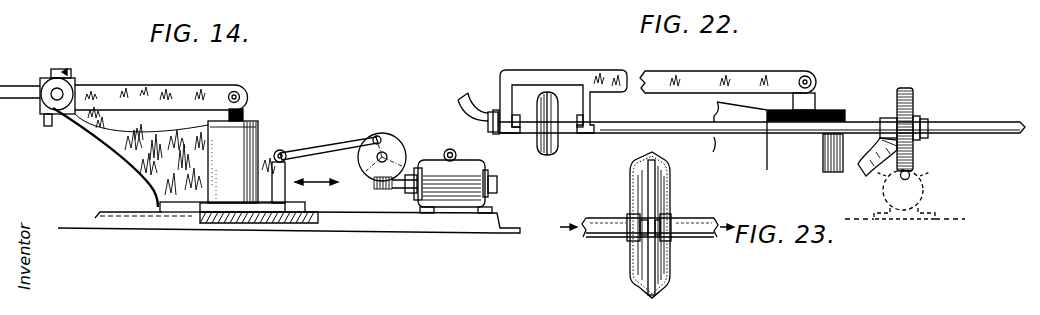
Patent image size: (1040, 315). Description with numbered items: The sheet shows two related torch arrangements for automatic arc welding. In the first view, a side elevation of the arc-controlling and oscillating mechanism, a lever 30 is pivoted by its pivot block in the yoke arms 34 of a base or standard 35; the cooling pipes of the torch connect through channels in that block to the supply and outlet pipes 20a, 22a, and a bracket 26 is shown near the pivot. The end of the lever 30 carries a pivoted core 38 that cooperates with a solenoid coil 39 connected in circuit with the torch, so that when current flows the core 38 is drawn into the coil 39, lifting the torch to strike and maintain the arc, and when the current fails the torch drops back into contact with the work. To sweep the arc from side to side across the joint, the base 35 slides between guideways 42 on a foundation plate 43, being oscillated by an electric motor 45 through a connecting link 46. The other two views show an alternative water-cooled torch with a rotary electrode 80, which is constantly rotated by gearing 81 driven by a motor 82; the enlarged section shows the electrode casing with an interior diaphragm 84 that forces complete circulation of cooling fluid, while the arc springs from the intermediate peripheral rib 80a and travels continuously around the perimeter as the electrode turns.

In FIG. 14, the pivot block 26 is at (63, 74).
In FIG. 14, the lever 30 is at (150, 86).
In FIG. 14, the outlet pipe 22a is at (44, 118).
In FIG. 14, the supply pipe 20a is at (60, 126).
In FIG. 14, the pivoted core 38 is at (244, 110).
In FIG. 14, the solenoid coil 39 is at (254, 128).
In FIG. 14, the connecting link 46 is at (333, 141).
In FIG. 14, the electric motor 45 is at (434, 162).
In FIG. 14, the guideways 42 is at (82, 230).
In FIG. 14, the base or standard 35 is at (160, 175).
In FIG. 14, the foundation plate 43 is at (268, 218).
In FIG. 22, the rotary electrode 80 is at (556, 149).
In FIG. 23, the rotary electrode 80 is at (670, 196).
In FIG. 22, the intermediate peripheral rib 80a is at (548, 152).
In FIG. 23, the intermediate peripheral rib 80a is at (656, 296).
In FIG. 22, the gearing 81 is at (913, 153).
In FIG. 22, the motor 82 is at (930, 188).
In FIG. 23, the interior diaphragm 84 is at (650, 203).
In FIG. 22, the yoke arms 34 is at (946, 6).